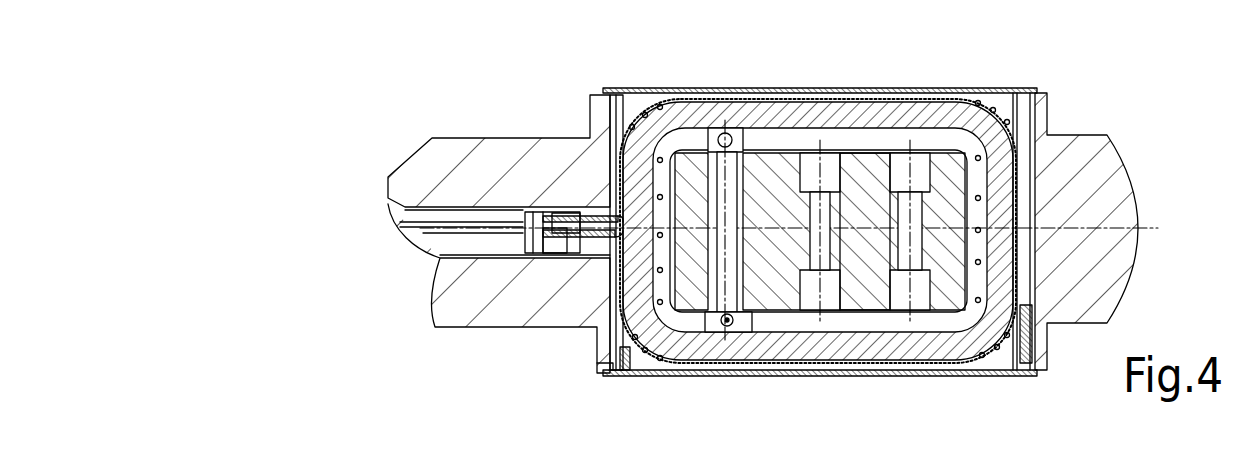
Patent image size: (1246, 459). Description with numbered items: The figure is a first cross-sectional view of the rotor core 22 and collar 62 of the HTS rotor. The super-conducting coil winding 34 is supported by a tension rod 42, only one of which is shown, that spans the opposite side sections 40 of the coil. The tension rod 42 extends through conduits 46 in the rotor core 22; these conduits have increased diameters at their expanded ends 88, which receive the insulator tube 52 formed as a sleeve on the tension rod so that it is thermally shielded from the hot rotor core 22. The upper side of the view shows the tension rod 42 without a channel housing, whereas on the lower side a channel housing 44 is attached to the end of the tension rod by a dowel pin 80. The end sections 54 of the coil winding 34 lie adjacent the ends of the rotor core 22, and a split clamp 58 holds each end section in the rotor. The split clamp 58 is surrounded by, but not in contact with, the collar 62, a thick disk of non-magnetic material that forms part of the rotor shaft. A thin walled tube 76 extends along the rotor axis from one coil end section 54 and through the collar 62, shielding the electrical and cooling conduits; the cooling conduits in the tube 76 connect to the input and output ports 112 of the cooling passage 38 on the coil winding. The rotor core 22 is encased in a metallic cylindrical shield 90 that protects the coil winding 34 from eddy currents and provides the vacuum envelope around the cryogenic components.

The rotor core 22 is at (718, 92).
The coil winding 34 is at (997, 95).
The cooling passage 38 is at (940, 100).
The side sections 40 is at (822, 122).
The tension rod 42 is at (743, 235).
The channel housing 44 is at (735, 360).
The conduits 46 is at (858, 193).
The insulator tube 52 is at (683, 236).
The end sections 54 is at (637, 155).
The split clamp 58 is at (1007, 355).
The collar 62 is at (498, 147).
The thin walled tube 76 is at (487, 260).
The dowel pin 80 is at (743, 315).
The expanded ends 88 is at (827, 290).
The cylindrical shield 90 is at (873, 88).
The input and output ports 112 is at (503, 214).